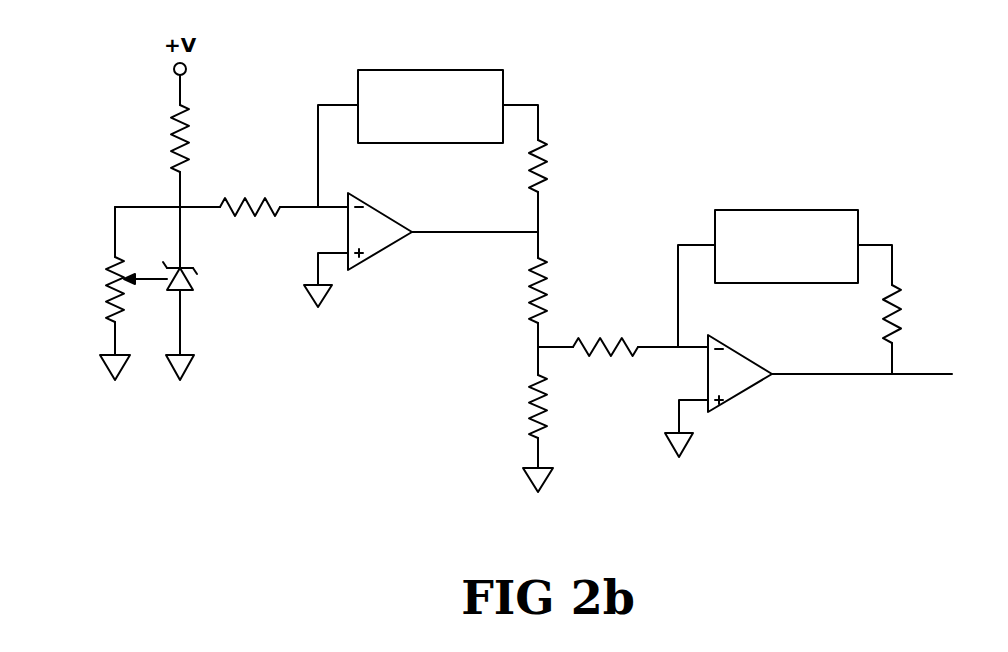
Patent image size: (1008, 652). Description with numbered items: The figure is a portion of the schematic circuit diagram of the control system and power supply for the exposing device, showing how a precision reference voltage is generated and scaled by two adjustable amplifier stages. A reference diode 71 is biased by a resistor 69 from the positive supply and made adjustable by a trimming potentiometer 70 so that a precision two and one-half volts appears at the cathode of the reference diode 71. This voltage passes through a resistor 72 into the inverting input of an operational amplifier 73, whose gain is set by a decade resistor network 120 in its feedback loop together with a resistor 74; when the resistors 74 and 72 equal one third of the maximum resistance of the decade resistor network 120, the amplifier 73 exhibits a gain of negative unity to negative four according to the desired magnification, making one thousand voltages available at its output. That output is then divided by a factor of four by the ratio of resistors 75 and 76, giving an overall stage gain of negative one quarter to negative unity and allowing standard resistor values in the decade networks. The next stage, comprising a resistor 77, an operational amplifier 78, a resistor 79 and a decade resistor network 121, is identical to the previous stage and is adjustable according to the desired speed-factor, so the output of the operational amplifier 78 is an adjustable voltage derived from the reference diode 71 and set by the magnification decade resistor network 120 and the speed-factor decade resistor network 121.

The resistor 69 is at (184, 128).
The trimming potentiometer 70 is at (108, 290).
The reference diode 71 is at (194, 265).
The resistor 72 is at (236, 200).
The operational amplifier 73 is at (383, 250).
The resistor 74 is at (543, 165).
The resistor 75 is at (530, 300).
The resistor 76 is at (530, 412).
The resistor 77 is at (590, 343).
The operational amplifier 78 is at (742, 393).
The resistor 79 is at (885, 318).
The decade resistor network 120 is at (428, 64).
The decade resistor network 121 is at (777, 205).